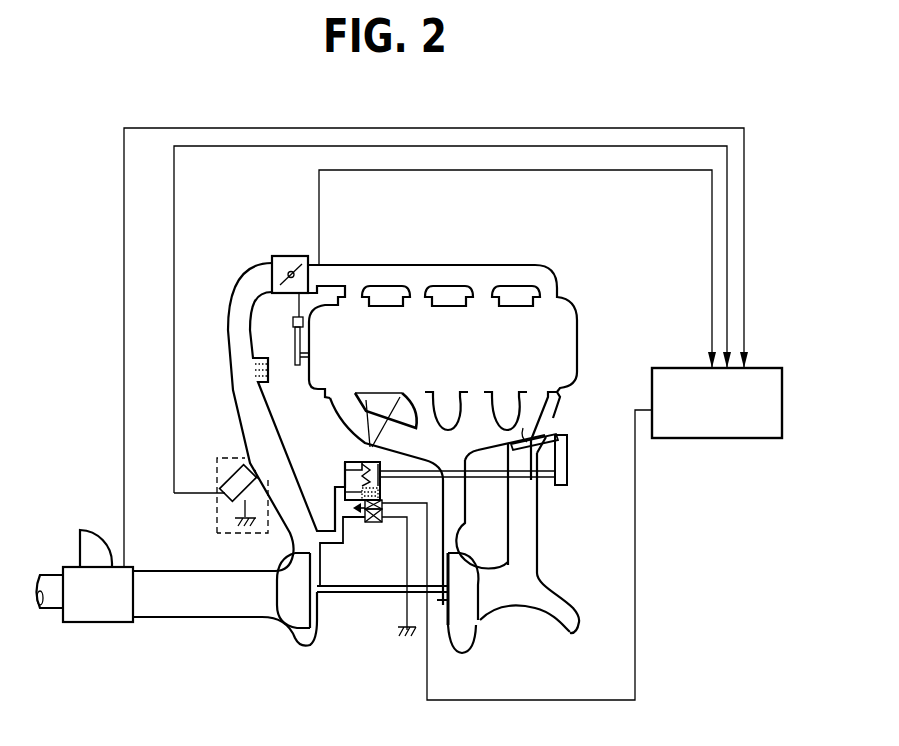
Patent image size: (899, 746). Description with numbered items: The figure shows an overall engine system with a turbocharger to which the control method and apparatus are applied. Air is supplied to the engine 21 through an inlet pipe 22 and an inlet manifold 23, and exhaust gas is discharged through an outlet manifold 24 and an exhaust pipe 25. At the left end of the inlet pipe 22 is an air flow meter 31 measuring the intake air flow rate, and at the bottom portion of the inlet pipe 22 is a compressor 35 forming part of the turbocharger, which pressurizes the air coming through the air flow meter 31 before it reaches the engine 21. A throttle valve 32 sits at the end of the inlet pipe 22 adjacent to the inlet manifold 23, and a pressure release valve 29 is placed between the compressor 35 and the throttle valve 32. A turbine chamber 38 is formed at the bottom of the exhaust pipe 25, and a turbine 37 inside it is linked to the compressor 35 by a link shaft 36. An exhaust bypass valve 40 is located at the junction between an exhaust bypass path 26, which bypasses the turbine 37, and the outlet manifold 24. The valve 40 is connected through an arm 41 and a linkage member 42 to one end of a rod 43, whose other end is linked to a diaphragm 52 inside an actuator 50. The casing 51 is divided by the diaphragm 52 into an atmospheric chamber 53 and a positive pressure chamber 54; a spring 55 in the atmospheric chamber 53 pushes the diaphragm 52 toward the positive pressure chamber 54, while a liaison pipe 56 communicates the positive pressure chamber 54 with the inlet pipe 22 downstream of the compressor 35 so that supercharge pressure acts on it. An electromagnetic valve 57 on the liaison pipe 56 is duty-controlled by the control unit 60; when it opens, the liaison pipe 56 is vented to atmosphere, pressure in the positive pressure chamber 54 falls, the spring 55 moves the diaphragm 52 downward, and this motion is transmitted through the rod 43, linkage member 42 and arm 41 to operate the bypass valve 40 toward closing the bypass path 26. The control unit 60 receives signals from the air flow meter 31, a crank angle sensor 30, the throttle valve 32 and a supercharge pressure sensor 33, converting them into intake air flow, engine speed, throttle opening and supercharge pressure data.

The engine 21 is at (578, 381).
The inlet pipe 22 is at (230, 333).
The inlet manifold 23 is at (388, 265).
The outlet manifold 24 is at (340, 407).
The exhaust pipe 25 is at (463, 521).
The exhaust bypass path 26 is at (527, 557).
The pressure release valve 29 is at (268, 380).
The crank angle sensor 30 is at (293, 322).
The air flow meter 31 is at (98, 612).
The throttle valve 32 is at (272, 262).
The supercharge pressure sensor 33 is at (217, 533).
The compressor 35 is at (298, 606).
The link shaft 36 is at (363, 594).
The turbine 37 is at (467, 605).
The turbine chamber 38 is at (462, 655).
The exhaust bypass valve 40 is at (541, 437).
The arm 41 is at (567, 447).
The linkage member 42 is at (567, 473).
The rod 43 is at (542, 482).
The actuator 50 is at (343, 474).
The casing 51 is at (403, 398).
The diaphragm 52 is at (364, 442).
The atmospheric chamber 53 is at (380, 490).
The positive pressure chamber 54 is at (351, 462).
The spring 55 is at (378, 472).
The liaison pipe 56 is at (345, 490).
The electromagnetic valve 57 is at (375, 523).
The control unit 60 is at (738, 440).